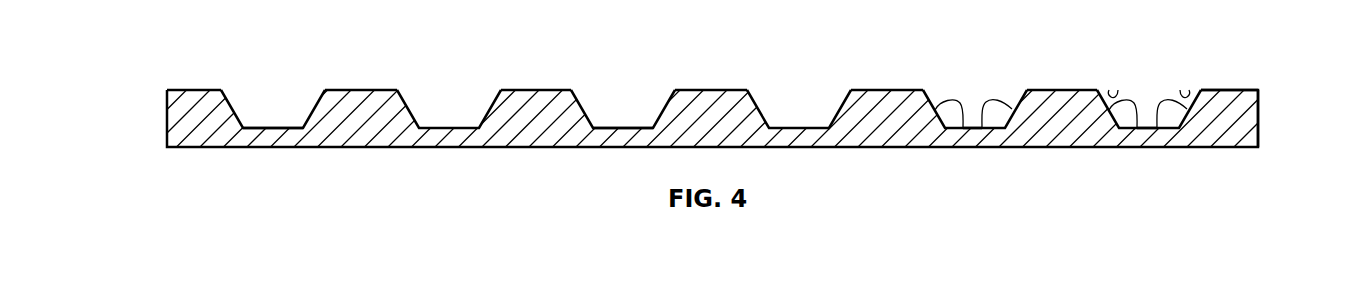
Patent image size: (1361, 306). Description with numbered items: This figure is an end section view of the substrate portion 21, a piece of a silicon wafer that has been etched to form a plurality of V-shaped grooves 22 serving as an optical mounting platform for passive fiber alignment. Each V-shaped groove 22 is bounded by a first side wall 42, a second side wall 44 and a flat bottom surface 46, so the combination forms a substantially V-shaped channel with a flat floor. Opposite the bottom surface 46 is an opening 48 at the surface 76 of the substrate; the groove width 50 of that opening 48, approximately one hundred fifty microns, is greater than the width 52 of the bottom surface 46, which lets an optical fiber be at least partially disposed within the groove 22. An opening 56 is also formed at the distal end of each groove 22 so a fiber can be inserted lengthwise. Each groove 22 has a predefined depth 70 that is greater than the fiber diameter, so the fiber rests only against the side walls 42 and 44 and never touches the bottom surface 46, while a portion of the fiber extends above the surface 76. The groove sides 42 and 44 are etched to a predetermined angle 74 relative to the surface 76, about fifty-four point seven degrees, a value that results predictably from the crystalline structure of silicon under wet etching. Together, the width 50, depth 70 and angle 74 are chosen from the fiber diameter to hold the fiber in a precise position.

The substrate portion 21 is at (198, 100).
The V-shaped groove 22 is at (292, 92).
The first side wall 42 is at (962, 131).
The second side wall 44 is at (983, 131).
The bottom surface 46 is at (972, 130).
The opening 48 is at (466, 89).
The groove width 50 is at (397, 13).
The width of the bottom surface 52 is at (527, 177).
The opening 56 is at (285, 119).
The predefined depth 70 is at (119, 173).
The predetermined angle 74 is at (1118, 90).
The surface of the substrate 76 is at (1247, 91).